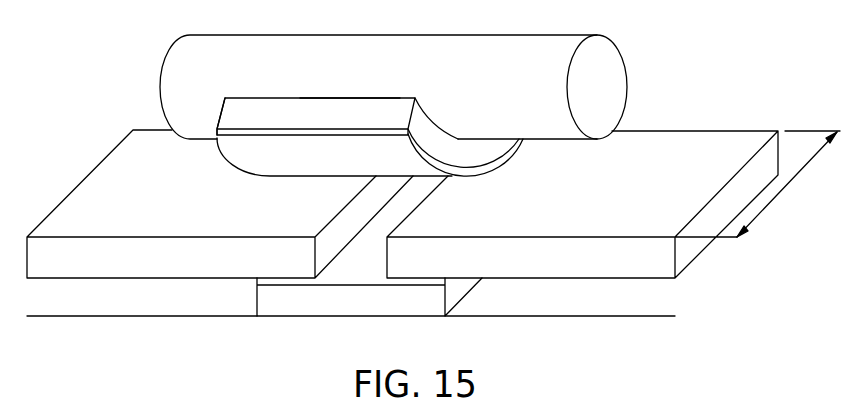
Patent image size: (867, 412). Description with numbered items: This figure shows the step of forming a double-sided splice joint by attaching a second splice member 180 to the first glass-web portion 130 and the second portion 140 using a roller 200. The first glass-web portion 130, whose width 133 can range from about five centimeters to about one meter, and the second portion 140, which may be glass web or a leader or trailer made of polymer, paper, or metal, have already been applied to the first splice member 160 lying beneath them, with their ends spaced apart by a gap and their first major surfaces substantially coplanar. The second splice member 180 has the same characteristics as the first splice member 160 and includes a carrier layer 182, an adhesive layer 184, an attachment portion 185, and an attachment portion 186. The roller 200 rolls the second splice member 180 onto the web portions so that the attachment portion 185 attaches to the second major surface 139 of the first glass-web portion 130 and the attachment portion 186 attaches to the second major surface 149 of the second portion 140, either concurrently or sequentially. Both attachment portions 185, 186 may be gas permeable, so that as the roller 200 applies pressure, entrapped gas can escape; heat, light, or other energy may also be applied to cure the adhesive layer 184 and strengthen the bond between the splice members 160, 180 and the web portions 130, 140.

The roller 200 is at (628, 85).
The second major surface 149 is at (212, 202).
The second major surface 139 is at (572, 202).
The width 133 is at (783, 187).
The second splice member 180 is at (268, 103).
The attachment portion 186 is at (235, 103).
The carrier layer 182 is at (357, 103).
The attachment portion 185 is at (403, 103).
The adhesive layer 184 is at (292, 167).
The first splice member 160 is at (352, 303).
The second portion 140 is at (118, 267).
The first glass-web portion 130 is at (583, 267).